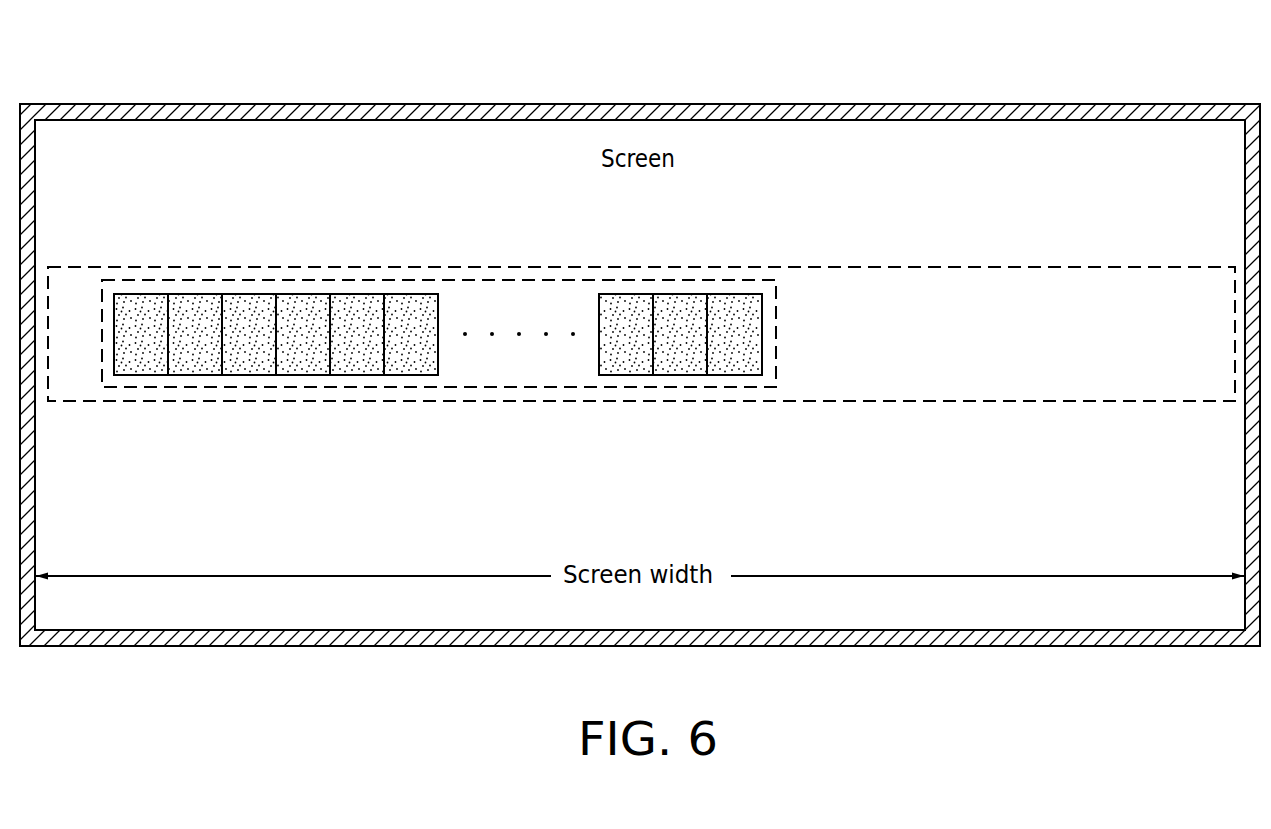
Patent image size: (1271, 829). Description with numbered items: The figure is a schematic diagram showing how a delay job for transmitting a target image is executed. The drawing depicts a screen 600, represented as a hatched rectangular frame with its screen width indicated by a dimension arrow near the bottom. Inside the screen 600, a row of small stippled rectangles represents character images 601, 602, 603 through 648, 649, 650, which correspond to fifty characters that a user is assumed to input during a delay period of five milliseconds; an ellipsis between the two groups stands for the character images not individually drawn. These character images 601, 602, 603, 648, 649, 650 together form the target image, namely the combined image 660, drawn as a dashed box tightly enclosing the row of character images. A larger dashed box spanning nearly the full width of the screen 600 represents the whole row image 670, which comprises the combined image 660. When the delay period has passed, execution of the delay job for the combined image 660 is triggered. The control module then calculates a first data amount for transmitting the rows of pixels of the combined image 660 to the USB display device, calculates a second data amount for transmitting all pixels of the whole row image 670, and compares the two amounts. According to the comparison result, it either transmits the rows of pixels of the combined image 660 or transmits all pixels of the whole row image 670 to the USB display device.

The screen 600 is at (637, 104).
The character image 601 is at (139, 294).
The character image 602 is at (193, 294).
The character image 603 is at (247, 294).
The character image 648 is at (622, 294).
The character image 649 is at (677, 294).
The character image 650 is at (731, 294).
The combined image 660 is at (517, 280).
The whole row image 670 is at (1001, 267).